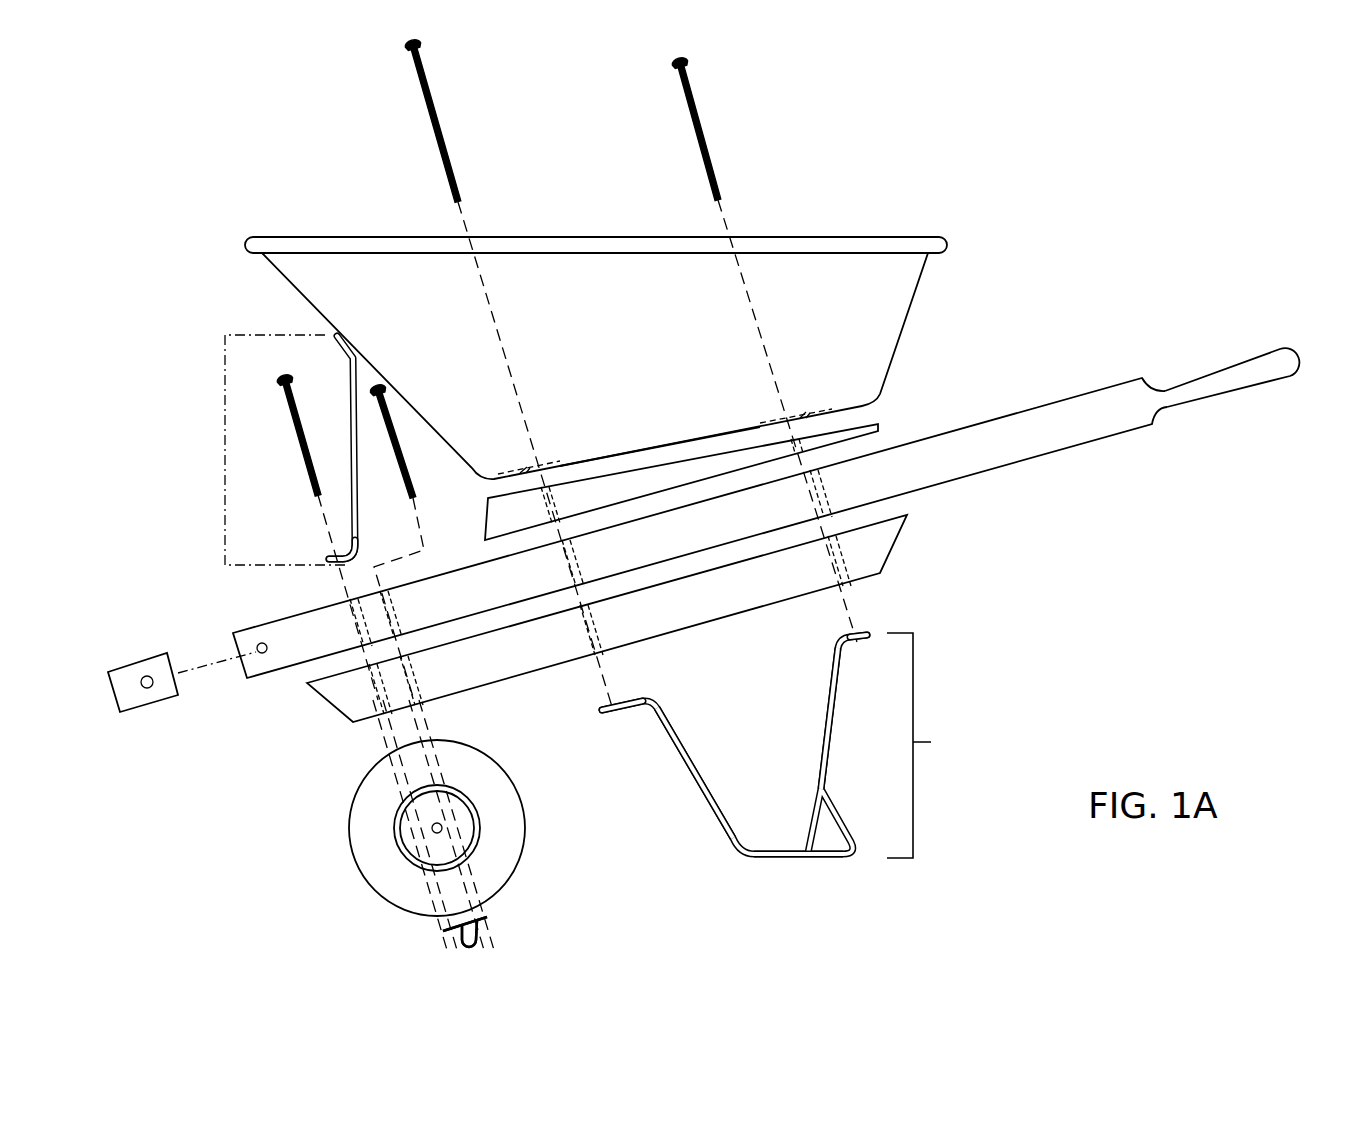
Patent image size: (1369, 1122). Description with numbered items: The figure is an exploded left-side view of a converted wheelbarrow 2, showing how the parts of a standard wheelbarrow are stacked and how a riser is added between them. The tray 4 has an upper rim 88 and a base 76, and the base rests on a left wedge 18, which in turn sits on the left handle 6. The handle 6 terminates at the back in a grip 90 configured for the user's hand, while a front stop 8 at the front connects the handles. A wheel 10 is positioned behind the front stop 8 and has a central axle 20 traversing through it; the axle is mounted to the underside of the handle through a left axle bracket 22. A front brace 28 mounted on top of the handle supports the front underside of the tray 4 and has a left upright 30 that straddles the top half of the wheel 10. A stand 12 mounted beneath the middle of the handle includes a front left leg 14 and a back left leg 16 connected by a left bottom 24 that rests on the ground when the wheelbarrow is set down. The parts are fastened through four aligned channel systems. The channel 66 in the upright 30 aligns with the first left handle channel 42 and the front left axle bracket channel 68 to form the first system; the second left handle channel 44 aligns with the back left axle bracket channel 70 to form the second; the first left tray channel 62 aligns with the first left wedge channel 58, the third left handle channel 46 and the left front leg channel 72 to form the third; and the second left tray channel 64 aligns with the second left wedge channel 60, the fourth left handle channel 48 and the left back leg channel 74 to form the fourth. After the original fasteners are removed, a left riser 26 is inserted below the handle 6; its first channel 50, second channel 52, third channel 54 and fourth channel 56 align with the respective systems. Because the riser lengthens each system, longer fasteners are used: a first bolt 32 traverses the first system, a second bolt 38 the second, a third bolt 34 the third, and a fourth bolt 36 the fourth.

The wheelbarrow 2 is at (990, 178).
The tray 4 is at (621, 345).
The left handle 6 is at (688, 539).
The front stop 8 is at (140, 710).
The wheel 10 is at (520, 838).
The stand 12 is at (783, 745).
The front left leg 14 is at (686, 776).
The back left leg 16 is at (834, 712).
The left wedge 18 is at (564, 511).
The central axle 20 is at (432, 828).
The left axle bracket 22 is at (414, 938).
The left bottom 24 is at (770, 858).
The left riser 26 is at (692, 609).
The front brace 28 is at (224, 447).
The left upright 30 is at (352, 400).
The first bolt 32 is at (298, 425).
The third bolt 34 is at (445, 150).
The fourth bolt 36 is at (700, 140).
The second bolt 38 is at (400, 436).
The first left handle channel 42 is at (352, 620).
The second left handle channel 44 is at (396, 607).
The third left handle channel 46 is at (578, 562).
The fourth left handle channel 48 is at (822, 504).
The first riser channel 50 is at (376, 678).
The second riser channel 52 is at (412, 678).
The third riser channel 54 is at (598, 622).
The fourth riser channel 56 is at (838, 560).
The first left wedge channel 58 is at (548, 508).
The second left wedge channel 60 is at (800, 442).
The first left tray channel 62 is at (541, 468).
The second left tray channel 64 is at (789, 416).
The upright channel 66 is at (340, 553).
The front left axle bracket channel 68 is at (450, 935).
The back left axle bracket channel 70 is at (485, 930).
The left front leg channel 72 is at (618, 712).
The left back leg channel 74 is at (856, 638).
The base 76 is at (647, 447).
The upper rim 88 is at (852, 236).
The grip 90 is at (1242, 383).